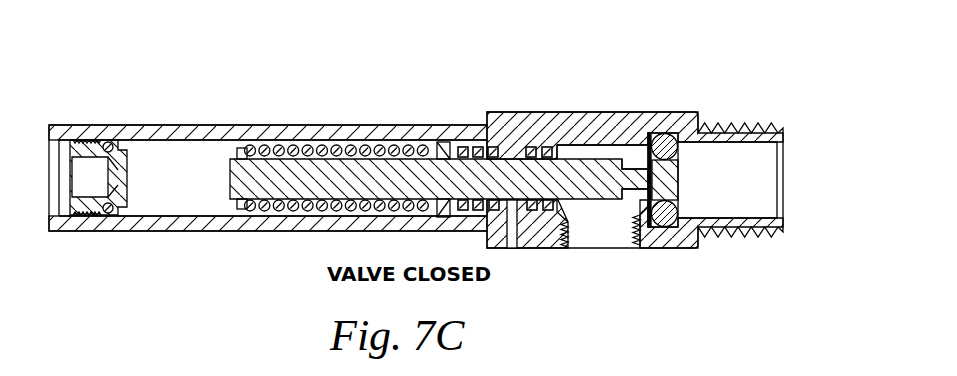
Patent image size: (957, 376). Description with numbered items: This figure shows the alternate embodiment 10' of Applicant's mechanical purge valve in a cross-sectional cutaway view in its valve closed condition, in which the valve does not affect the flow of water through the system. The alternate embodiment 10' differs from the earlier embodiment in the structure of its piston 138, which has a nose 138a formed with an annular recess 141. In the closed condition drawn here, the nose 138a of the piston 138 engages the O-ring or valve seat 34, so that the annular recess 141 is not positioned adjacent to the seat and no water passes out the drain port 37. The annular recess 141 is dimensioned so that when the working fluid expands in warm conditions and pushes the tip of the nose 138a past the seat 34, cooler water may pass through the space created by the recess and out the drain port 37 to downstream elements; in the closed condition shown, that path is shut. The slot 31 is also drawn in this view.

The alternate embodiment of the valve 10' is at (412, 133).
The slot 31 is at (573, 152).
The O-ring or valve seat 34 is at (657, 135).
The drain port 37 is at (587, 245).
The piston 138 is at (256, 181).
The nose 138a is at (673, 172).
The annular recess 141 is at (630, 156).